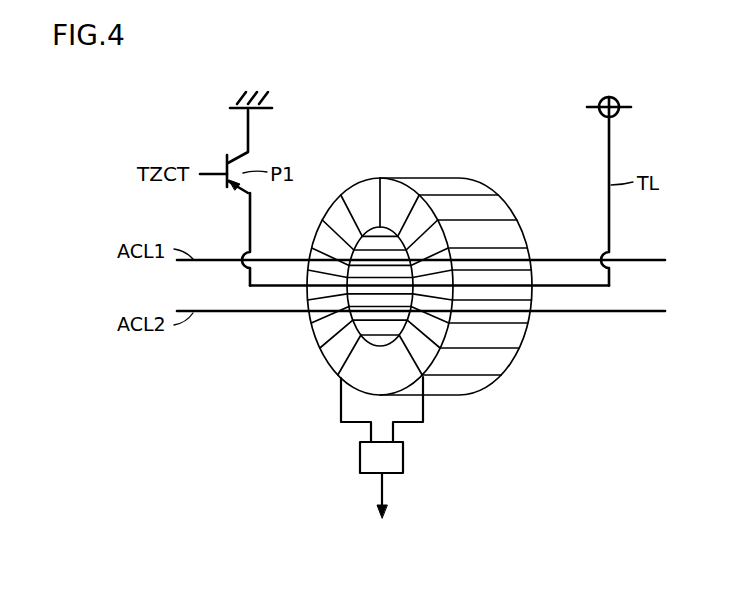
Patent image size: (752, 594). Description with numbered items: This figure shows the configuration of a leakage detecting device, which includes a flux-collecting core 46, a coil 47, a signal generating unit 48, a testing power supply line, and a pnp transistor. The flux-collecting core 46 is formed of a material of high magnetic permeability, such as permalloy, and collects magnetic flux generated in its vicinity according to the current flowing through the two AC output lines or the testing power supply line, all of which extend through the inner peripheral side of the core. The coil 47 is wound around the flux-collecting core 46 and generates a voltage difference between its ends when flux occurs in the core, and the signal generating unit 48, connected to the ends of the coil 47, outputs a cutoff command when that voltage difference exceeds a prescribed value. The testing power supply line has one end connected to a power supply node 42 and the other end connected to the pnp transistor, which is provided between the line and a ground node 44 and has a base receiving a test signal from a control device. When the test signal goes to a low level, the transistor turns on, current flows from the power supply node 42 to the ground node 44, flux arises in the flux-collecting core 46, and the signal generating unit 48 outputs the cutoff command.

The power supply node 42 is at (607, 93).
The ground node 44 is at (254, 86).
The flux-collecting core 46 is at (444, 265).
The coil 47 is at (490, 324).
The signal generating unit 48 is at (405, 460).